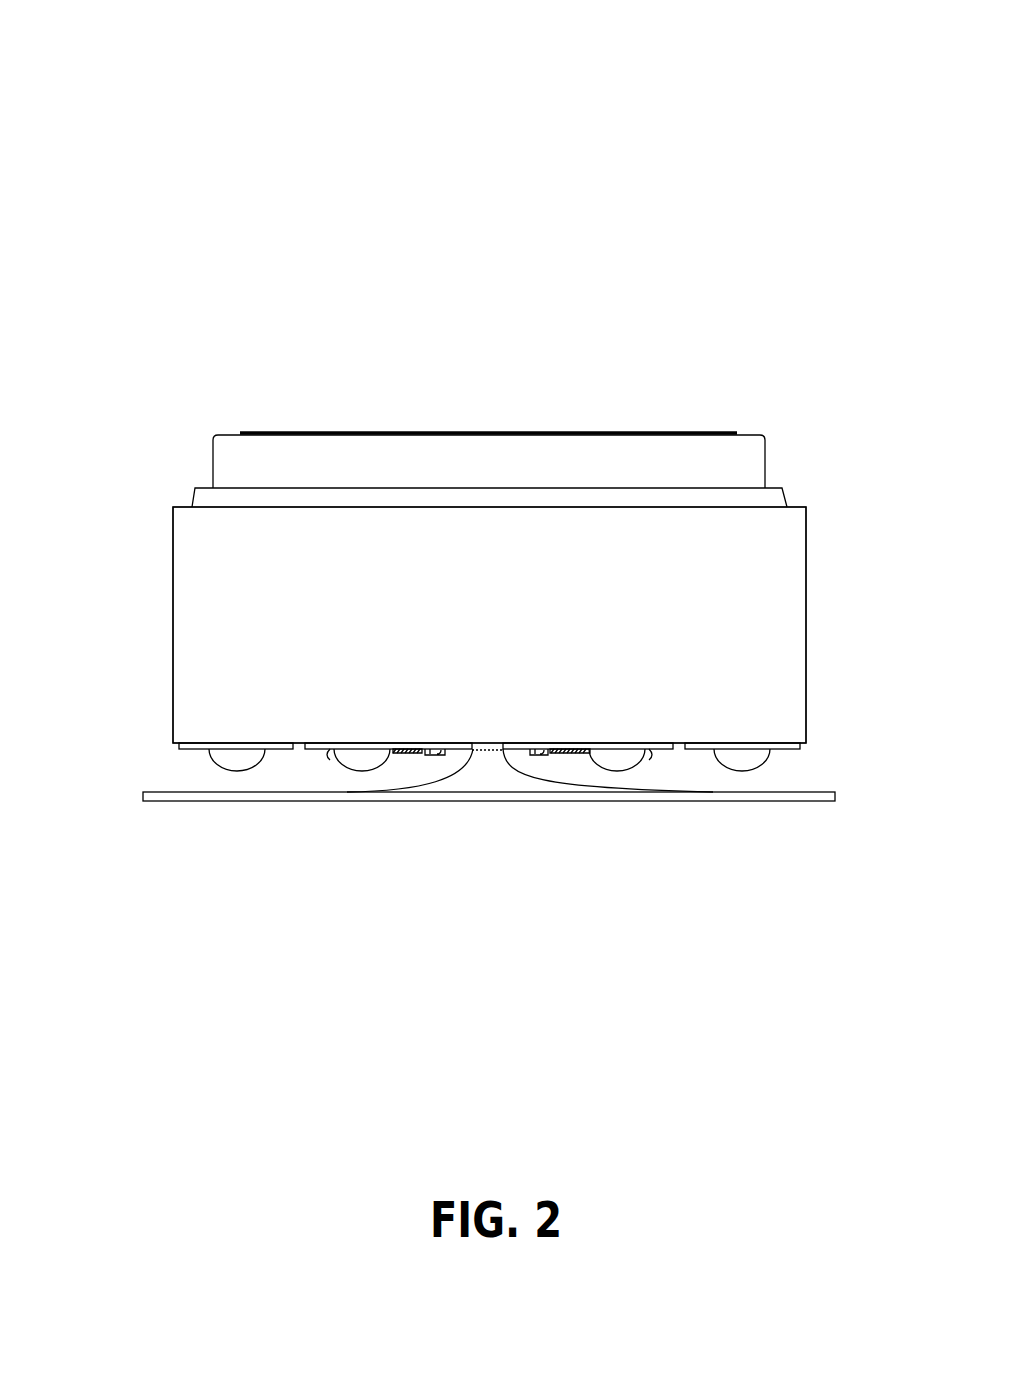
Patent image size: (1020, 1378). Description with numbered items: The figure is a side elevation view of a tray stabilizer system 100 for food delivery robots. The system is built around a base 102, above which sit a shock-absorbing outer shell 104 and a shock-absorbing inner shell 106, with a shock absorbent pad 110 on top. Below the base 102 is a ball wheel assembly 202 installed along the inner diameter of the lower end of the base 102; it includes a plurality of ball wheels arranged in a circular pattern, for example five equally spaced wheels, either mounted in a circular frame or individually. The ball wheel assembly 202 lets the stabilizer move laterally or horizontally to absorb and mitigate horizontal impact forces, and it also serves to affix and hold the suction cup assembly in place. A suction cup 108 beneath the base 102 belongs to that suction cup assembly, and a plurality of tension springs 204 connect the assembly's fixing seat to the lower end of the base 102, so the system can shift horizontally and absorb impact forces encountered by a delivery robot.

The tray stabilizer system 100 is at (272, 173).
The base 102 is at (235, 647).
The shock-absorbing outer shell 104 is at (195, 490).
The shock-absorbing inner shell 106 is at (768, 462).
The suction cup 108 is at (788, 803).
The shock absorbent pad 110 is at (727, 430).
The ball wheel assembly 202 is at (345, 770).
The tension springs 204 is at (560, 757).